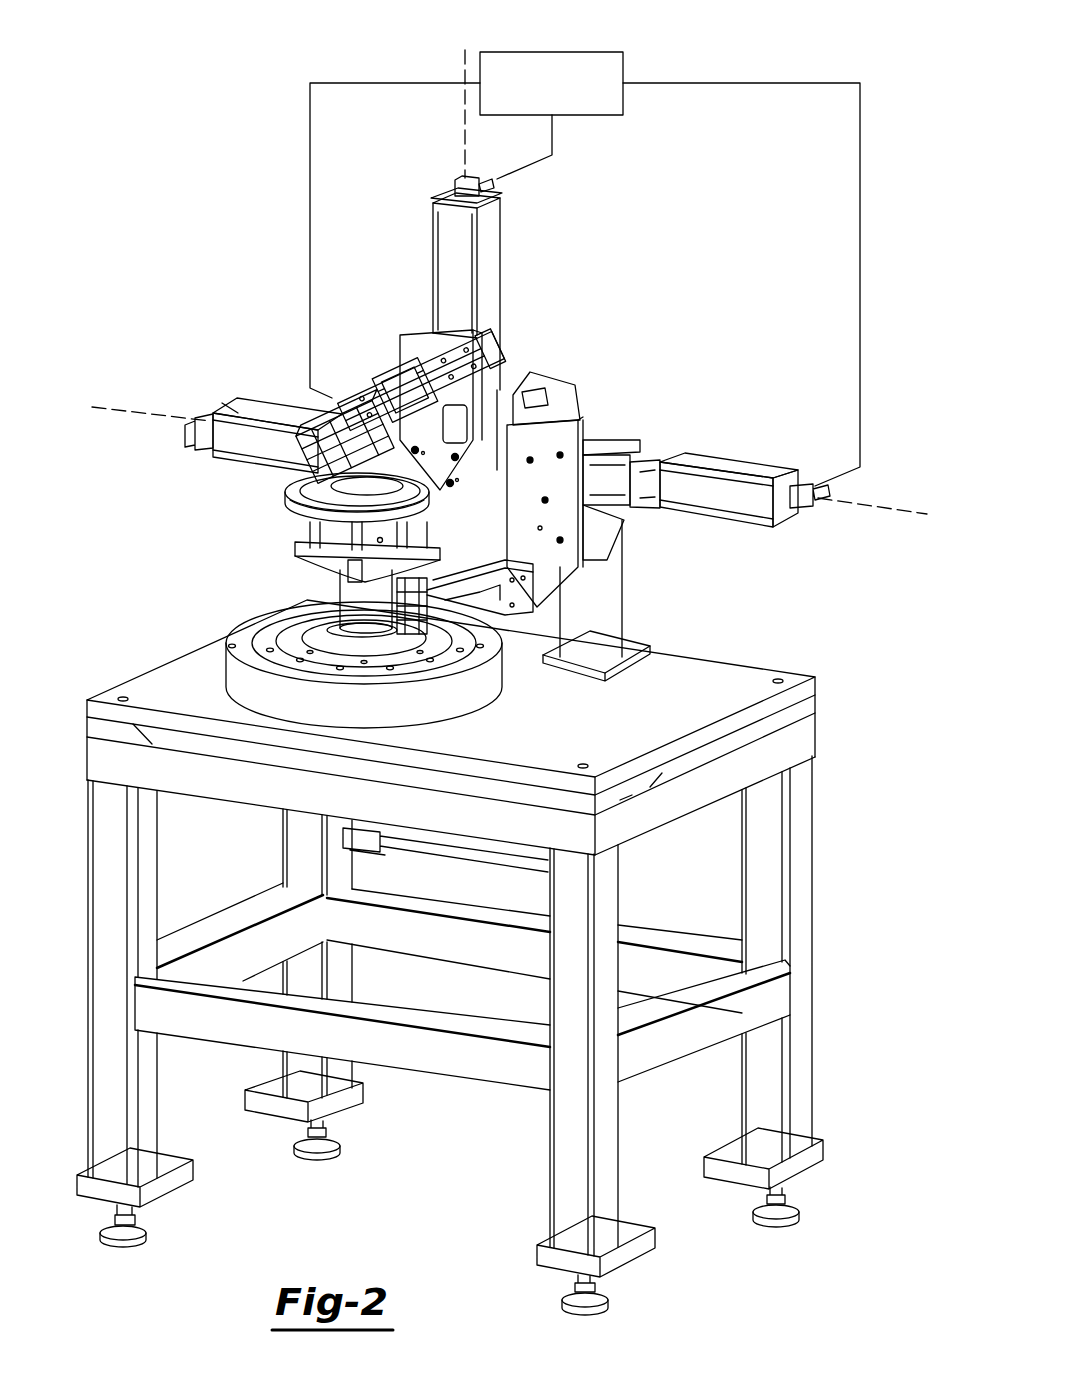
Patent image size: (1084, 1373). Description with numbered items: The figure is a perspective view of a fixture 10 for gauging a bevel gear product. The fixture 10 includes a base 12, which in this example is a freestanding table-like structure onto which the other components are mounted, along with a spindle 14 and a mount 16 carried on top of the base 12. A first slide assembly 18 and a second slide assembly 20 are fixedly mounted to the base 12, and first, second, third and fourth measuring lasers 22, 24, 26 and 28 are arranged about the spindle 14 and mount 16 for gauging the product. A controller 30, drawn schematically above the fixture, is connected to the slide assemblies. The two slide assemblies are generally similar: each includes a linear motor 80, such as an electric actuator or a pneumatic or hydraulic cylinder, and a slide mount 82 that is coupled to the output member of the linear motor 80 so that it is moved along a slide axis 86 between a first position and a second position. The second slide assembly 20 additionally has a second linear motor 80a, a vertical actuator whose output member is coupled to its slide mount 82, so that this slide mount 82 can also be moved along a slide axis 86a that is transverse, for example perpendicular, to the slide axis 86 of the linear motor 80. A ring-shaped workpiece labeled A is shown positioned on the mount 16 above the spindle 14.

The fixture 10 is at (686, 47).
The base 12 is at (758, 682).
The spindle 14 is at (231, 634).
The mount 16 is at (285, 543).
The first slide assembly 18 is at (714, 448).
The second slide assembly 20 is at (460, 420).
The first measuring laser 22 is at (441, 615).
The second measuring laser 24 is at (348, 412).
The third measuring laser 26 is at (400, 372).
The fourth measuring laser 28 is at (578, 438).
The controller 30 is at (592, 115).
The linear motor 80 is at (238, 448).
The second linear motor 80a is at (488, 245).
The slide mount 82 is at (414, 333).
The slide axis 86 is at (108, 405).
The slide axis 86a is at (462, 92).
The ring workpiece A is at (292, 486).